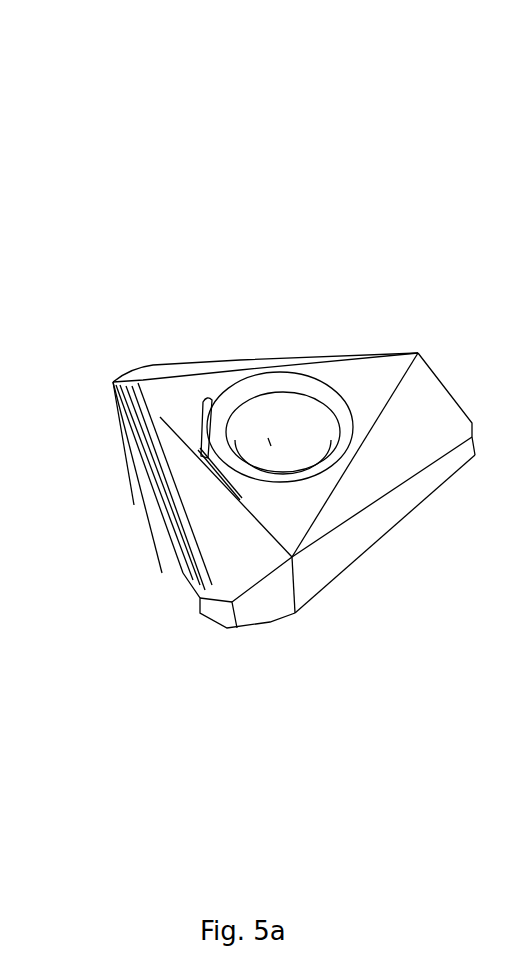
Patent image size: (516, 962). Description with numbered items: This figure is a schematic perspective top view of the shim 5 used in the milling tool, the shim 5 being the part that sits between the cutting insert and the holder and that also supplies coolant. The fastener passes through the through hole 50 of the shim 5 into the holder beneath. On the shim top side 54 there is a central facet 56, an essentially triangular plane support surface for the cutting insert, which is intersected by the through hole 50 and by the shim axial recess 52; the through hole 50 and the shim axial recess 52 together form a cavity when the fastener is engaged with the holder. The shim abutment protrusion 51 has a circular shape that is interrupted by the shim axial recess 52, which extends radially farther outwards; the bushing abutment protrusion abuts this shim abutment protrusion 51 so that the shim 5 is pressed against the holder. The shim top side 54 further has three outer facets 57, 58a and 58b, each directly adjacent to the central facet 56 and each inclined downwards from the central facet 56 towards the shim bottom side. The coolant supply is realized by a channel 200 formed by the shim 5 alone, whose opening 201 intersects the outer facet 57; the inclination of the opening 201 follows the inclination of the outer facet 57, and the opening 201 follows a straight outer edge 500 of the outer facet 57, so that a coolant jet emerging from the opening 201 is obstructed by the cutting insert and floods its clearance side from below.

The shim 5 is at (375, 377).
The through hole 50 is at (288, 457).
The shim abutment protrusion 51 is at (279, 400).
The shim axial recess 52 is at (183, 573).
The shim top side 54 is at (356, 382).
The central facet 56 is at (182, 400).
The outer facet 57 is at (217, 512).
The outer facet 58a is at (377, 482).
The outer facet 58b is at (217, 368).
The channel 200 is at (121, 378).
The opening 201 is at (172, 484).
The straight outer edge 500 is at (137, 453).